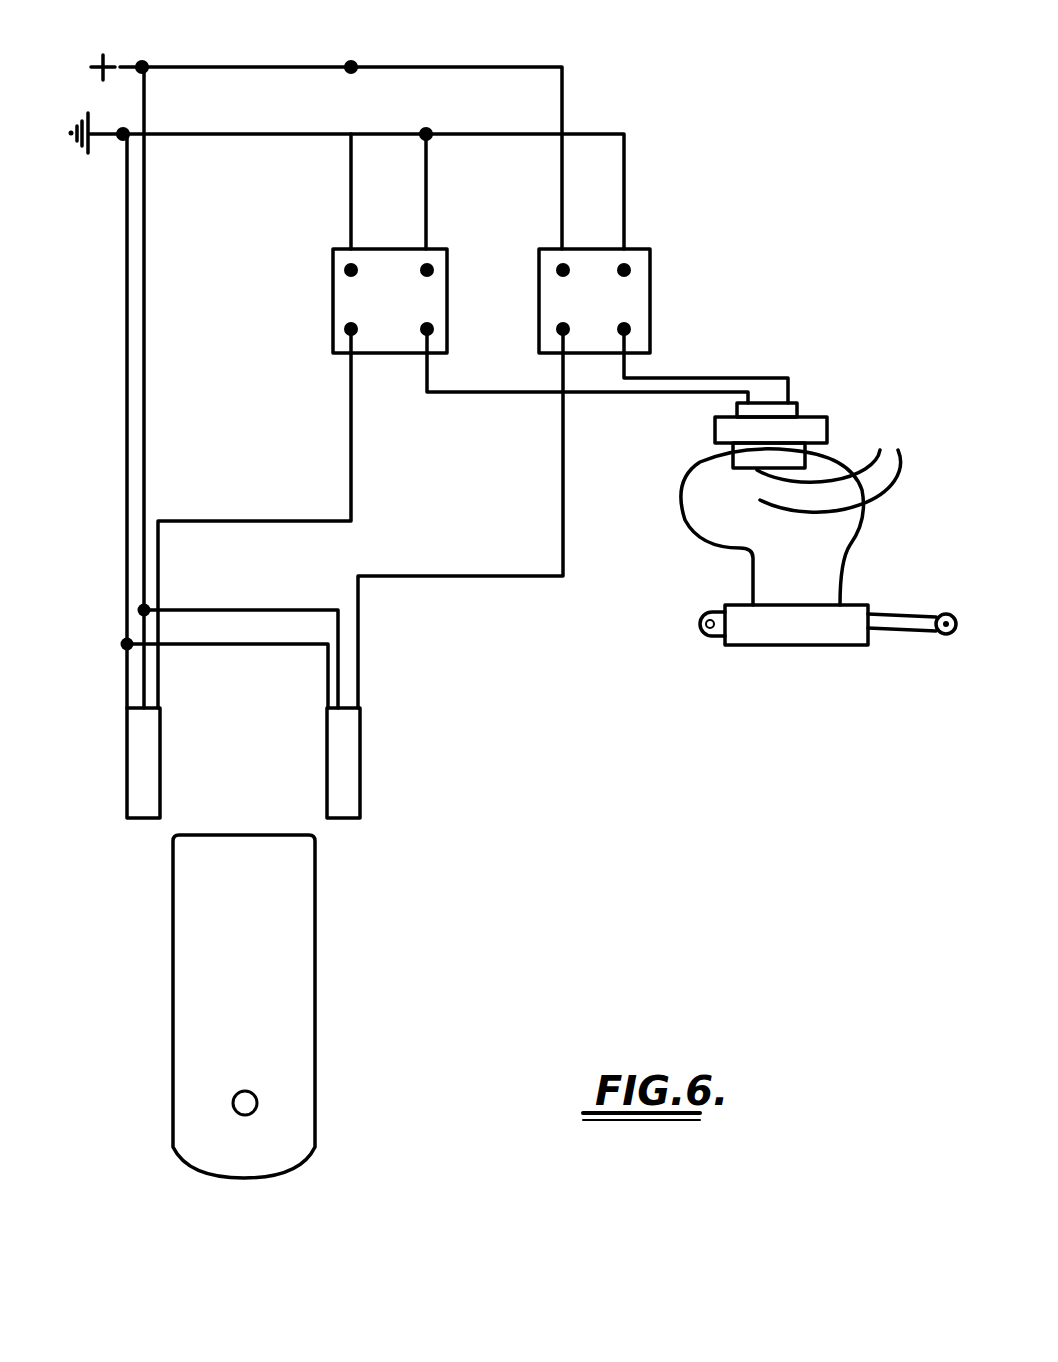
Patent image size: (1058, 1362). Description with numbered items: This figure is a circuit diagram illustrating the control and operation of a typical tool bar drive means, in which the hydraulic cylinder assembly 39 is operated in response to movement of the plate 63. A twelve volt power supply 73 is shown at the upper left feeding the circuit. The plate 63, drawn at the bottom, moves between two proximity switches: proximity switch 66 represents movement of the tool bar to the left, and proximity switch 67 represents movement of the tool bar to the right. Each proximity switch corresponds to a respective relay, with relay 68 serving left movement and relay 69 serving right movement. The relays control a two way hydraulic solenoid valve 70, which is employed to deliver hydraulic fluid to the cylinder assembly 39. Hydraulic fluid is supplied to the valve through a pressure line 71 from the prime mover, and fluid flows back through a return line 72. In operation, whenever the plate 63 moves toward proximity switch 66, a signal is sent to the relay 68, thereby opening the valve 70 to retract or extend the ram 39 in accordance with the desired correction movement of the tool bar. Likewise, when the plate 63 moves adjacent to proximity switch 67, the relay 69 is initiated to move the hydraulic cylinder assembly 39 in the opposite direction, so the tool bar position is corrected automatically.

The power supply 73 is at (72, 84).
The relay 68 is at (372, 298).
The relay 69 is at (628, 295).
The two way hydraulic solenoid valve 70 is at (757, 430).
The pressure line 71 is at (873, 456).
The return line 72 is at (887, 477).
The hydraulic cylinder assembly 39 is at (785, 630).
The proximity switch 66 is at (142, 758).
The proximity switch 67 is at (347, 758).
The plate 63 is at (280, 988).